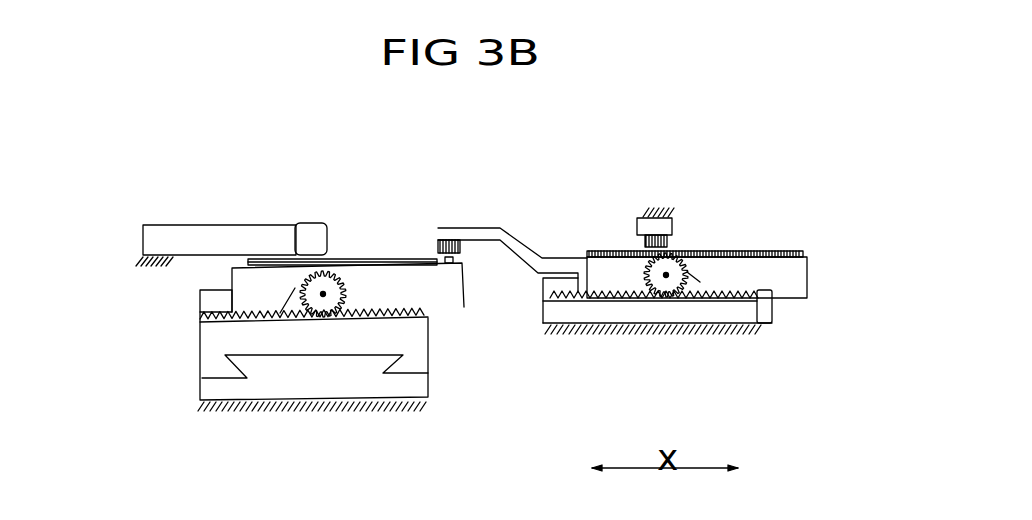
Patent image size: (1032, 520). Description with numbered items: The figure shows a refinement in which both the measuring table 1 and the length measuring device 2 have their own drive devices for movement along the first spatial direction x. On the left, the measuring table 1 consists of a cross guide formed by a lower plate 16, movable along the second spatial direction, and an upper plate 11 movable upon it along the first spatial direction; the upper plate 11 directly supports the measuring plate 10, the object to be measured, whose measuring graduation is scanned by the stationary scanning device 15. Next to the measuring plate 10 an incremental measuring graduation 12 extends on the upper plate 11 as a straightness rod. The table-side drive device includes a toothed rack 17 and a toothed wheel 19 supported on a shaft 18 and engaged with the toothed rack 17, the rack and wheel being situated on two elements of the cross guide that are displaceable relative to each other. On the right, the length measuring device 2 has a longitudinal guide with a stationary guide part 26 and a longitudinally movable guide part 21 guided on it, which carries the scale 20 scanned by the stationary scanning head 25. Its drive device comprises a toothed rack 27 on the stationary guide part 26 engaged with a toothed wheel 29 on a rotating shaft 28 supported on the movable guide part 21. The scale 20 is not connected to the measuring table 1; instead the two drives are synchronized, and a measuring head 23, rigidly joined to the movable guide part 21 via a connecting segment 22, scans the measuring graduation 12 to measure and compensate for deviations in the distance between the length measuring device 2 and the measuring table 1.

The measuring table 1 is at (172, 293).
The length measuring device 2 is at (697, 231).
The measuring plate 10 is at (372, 256).
The upper plate 11 is at (433, 297).
The incremental measuring graduation 12 is at (463, 306).
The scanning device 15 is at (307, 235).
The lower plate 16 is at (220, 347).
The toothed rack 17 is at (198, 313).
The shaft 18 is at (323, 295).
The toothed wheel 19 is at (280, 313).
The scale 20 is at (762, 252).
The longitudinally movable guide part 21 is at (793, 273).
The connecting segment 22 is at (500, 228).
The measuring head 23 is at (455, 232).
The scanning head 25 is at (663, 233).
The stationary guide part 26 is at (555, 288).
The toothed rack 27 is at (752, 281).
The rotating shaft 28 is at (666, 277).
The toothed wheel 29 is at (700, 282).